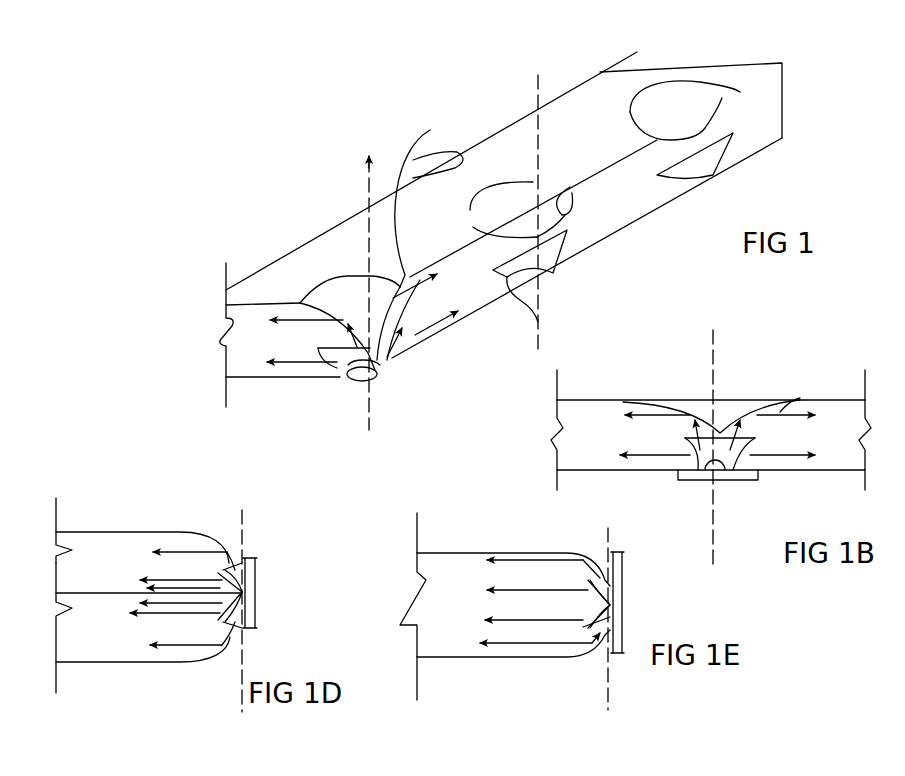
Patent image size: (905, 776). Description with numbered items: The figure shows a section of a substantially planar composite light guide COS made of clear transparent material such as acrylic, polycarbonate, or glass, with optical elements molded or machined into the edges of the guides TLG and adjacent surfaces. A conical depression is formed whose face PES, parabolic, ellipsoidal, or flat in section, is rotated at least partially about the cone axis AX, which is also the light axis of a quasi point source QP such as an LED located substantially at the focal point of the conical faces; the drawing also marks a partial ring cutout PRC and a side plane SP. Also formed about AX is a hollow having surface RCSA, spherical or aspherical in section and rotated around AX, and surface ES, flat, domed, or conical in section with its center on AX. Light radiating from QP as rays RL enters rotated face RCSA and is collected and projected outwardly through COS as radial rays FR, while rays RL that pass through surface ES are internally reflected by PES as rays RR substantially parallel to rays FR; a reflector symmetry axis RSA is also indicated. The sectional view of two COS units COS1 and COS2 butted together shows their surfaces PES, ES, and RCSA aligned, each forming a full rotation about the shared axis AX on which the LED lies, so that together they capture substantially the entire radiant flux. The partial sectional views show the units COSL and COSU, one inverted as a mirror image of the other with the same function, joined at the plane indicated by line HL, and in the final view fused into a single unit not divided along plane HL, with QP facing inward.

In FIG. 1, the composite light guide COS is at (408, 127).
In FIG. 1B, the first COS unit COS1 is at (658, 384).
In FIG. 1B, the second COS unit COS2 is at (840, 478).
In FIG. 1D, the upper COS unit COSU is at (106, 525).
In FIG. 1D, the lower COS unit COSL is at (90, 680).
In FIG. 1, the cone axis AX is at (535, 88).
In FIG. 1D, the cone axis AX is at (242, 713).
In FIG. 1E, the cone axis AX is at (606, 690).
In FIG. 1, the reflected rays RR is at (296, 320).
In FIG. 1B, the reflected rays RR is at (667, 410).
In FIG. 1D, the reflected rays RR is at (173, 551).
In FIG. 1, the conical depression face PES is at (571, 187).
In FIG. 1B, the conical depression face PES is at (693, 410).
In FIG. 1, the partial ring cutout PRC is at (687, 113).
In FIG. 1, the light guide edges TLG is at (770, 117).
In FIG. 1, the side plane SP is at (248, 320).
In FIG. 1, the joining plane line HL is at (640, 226).
In FIG. 1D, the joining plane line HL is at (93, 597).
In FIG. 1E, the joining plane line HL is at (467, 775).
In FIG. 1, the hollow surface ES is at (560, 242).
In FIG. 1, the radial rays FR is at (287, 362).
In FIG. 1B, the radial rays FR is at (655, 455).
In FIG. 1D, the radial rays FR is at (190, 583).
In FIG. 1E, the radial rays FR is at (545, 601).
In FIG. 1, the rotated hollow surface RCSA is at (542, 324).
In FIG. 1, the quasi point source QP is at (372, 378).
In FIG. 1B, the quasi point source QP is at (713, 467).
In FIG. 1D, the quasi point source QP is at (252, 590).
In FIG. 1E, the quasi point source QP is at (611, 605).
In FIG. 1, the element LED is at (374, 382).
In FIG. 1B, the element LED is at (712, 472).
In FIG. 1D, the element LED is at (248, 592).
In FIG. 1E, the element LED is at (611, 605).
In FIG. 1, the reflector symmetry axis RSA is at (348, 386).
In FIG. 1, the radiating rays RL is at (349, 387).